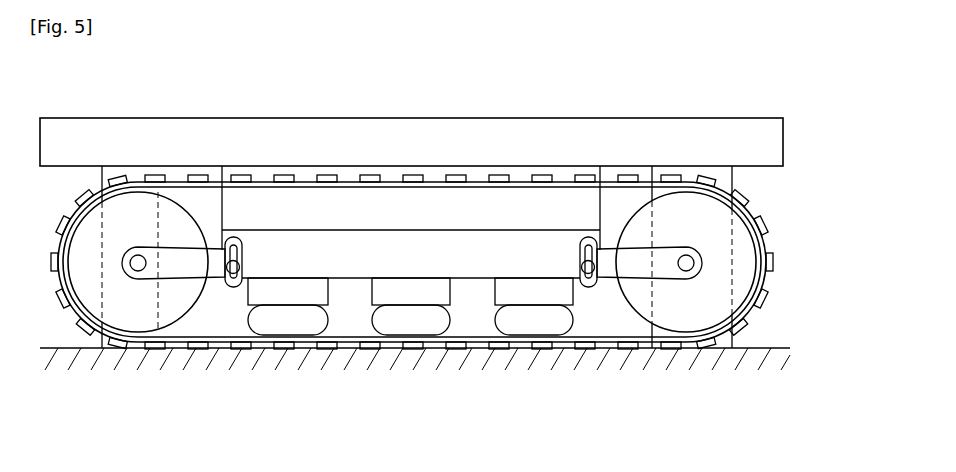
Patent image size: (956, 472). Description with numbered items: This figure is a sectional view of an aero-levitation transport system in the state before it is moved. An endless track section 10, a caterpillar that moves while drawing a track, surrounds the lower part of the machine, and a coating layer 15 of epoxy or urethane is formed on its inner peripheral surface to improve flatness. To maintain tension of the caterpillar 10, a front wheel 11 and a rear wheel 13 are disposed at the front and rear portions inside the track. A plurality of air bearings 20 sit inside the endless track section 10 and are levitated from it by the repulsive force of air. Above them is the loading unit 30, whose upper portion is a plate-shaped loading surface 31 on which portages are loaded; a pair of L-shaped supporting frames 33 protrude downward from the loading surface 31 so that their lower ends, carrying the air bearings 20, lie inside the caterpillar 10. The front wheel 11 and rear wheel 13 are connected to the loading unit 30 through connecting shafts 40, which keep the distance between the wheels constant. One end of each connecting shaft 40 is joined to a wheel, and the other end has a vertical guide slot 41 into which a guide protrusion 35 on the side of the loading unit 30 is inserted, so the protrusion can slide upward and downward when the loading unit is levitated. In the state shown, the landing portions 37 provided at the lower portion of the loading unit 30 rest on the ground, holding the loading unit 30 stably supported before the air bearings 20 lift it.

The endless track section 10 is at (443, 291).
The front wheel 11 is at (743, 285).
The rear wheel 13 is at (80, 287).
The coating layer 15 is at (768, 277).
The air bearing 20 is at (503, 303).
The loading unit 30 is at (411, 266).
The loading surface 31 is at (670, 140).
The supporting frame 33 is at (350, 262).
The guide protrusion 35 is at (593, 284).
The landing portion 37 is at (165, 315).
The connecting shaft 40 is at (213, 260).
The guide slot 41 is at (411, 322).